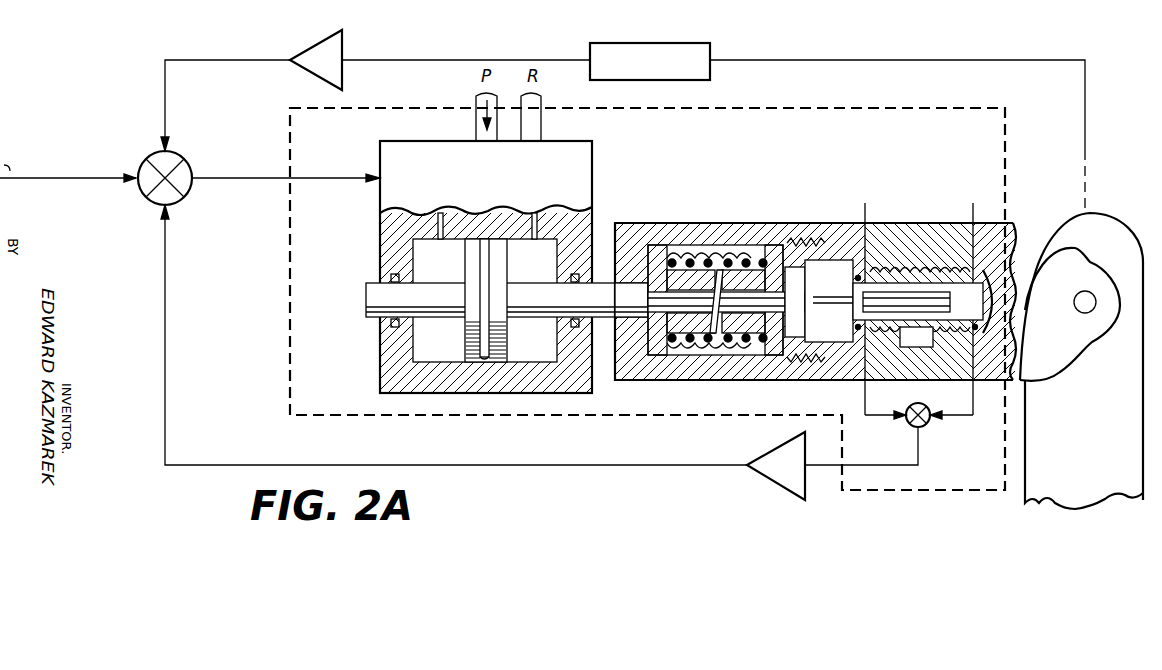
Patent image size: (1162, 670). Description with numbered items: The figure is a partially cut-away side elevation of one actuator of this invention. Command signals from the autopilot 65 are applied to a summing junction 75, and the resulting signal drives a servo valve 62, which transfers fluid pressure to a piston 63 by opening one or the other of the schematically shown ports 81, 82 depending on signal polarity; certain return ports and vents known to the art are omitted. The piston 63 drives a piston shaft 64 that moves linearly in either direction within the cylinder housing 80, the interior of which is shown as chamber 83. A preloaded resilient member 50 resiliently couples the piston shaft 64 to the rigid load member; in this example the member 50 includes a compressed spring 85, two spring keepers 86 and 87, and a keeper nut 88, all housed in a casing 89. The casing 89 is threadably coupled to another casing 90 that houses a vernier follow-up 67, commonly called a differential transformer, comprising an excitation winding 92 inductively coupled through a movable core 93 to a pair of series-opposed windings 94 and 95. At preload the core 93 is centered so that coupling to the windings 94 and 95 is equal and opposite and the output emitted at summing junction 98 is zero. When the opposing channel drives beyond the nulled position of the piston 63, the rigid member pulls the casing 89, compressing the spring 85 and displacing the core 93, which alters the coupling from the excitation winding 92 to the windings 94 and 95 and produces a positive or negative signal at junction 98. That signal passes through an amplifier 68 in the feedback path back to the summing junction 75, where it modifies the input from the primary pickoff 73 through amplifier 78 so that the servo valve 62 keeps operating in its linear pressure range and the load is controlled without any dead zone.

The preloaded resilient member 50 is at (734, 220).
The servo valve 62 is at (594, 158).
The piston 63 is at (473, 262).
The piston shaft 64 is at (393, 293).
The autopilot 65 is at (68, 164).
The vernier follow-up 67 is at (874, 216).
The amplifier 68 is at (770, 482).
The primary pickoff 73 is at (712, 46).
The summing junction 75 is at (190, 196).
The amplifier 78 is at (344, 44).
The cylinder housing 80 is at (403, 378).
The port 81 is at (540, 230).
The port 82 is at (440, 222).
The valve chamber 83 is at (443, 337).
The compressed spring 85 is at (712, 345).
The spring keeper 86 is at (662, 345).
The spring keeper 87 is at (777, 345).
The keeper nut 88 is at (805, 268).
The casing 89 is at (798, 246).
The casing 90 is at (992, 223).
The excitation winding 92 is at (874, 262).
The movable core 93 is at (927, 296).
The series opposed winding 94 is at (883, 330).
The series opposed winding 95 is at (955, 332).
The summing junction 98 is at (928, 424).